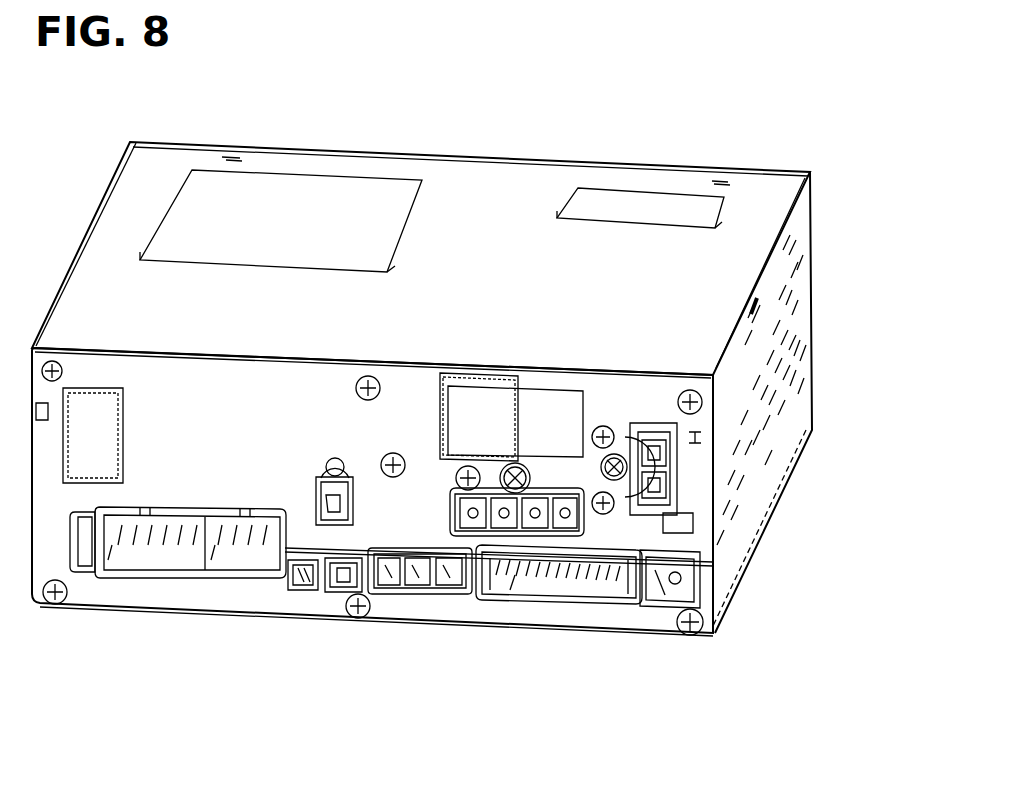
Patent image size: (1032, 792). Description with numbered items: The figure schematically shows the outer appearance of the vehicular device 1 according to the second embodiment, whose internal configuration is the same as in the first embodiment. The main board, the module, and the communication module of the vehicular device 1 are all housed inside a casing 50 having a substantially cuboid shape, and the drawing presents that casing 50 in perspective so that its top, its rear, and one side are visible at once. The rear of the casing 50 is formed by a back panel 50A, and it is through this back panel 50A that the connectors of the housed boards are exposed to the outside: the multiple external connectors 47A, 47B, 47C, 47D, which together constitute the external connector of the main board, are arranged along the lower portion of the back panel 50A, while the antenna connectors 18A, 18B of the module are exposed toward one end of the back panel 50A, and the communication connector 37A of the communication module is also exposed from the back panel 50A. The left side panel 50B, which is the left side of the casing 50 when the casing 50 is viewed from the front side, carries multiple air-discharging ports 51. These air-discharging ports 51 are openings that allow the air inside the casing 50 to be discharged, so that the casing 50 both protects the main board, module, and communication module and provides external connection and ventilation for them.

The vehicular device 1 is at (612, 73).
The casing 50 is at (612, 161).
The back panel 50A is at (133, 592).
The left side panel 50B is at (784, 266).
The air-discharging ports 51 is at (810, 353).
The antenna connector 18A is at (672, 459).
The antenna connector 18B is at (672, 494).
The communication connector 37A is at (507, 540).
The external connector 47A is at (187, 585).
The external connector 47B is at (318, 588).
The external connector 47C is at (424, 594).
The external connector 47D is at (608, 612).